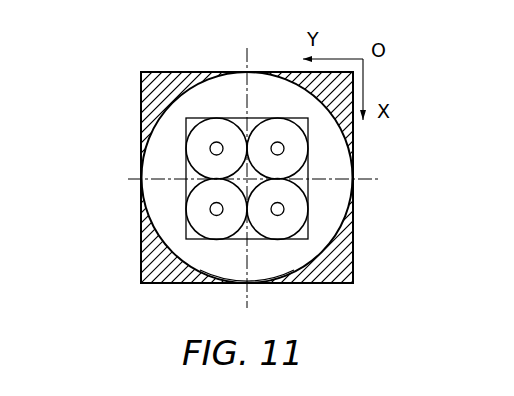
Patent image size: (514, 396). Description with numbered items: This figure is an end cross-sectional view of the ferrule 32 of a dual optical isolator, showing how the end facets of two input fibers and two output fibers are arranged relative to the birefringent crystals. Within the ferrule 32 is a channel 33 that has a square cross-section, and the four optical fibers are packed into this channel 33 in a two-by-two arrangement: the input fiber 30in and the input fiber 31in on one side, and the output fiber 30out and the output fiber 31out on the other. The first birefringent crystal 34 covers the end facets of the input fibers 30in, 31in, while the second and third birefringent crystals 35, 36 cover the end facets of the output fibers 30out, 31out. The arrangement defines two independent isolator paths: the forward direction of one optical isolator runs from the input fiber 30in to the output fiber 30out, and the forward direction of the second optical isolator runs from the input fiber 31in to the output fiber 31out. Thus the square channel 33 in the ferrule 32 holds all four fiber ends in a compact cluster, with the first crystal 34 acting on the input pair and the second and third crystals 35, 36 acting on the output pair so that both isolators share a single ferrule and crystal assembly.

The input optical fiber 30in is at (197, 146).
The output optical fiber 30out is at (276, 133).
The input optical fiber 31in is at (200, 212).
The output optical fiber 31out is at (296, 215).
The ferrule 32 is at (263, 285).
The channel 33 is at (303, 173).
The first birefringent crystal 34 is at (177, 72).
The second birefringent crystal 35 is at (301, 177).
The third birefringent crystal 36 is at (355, 213).